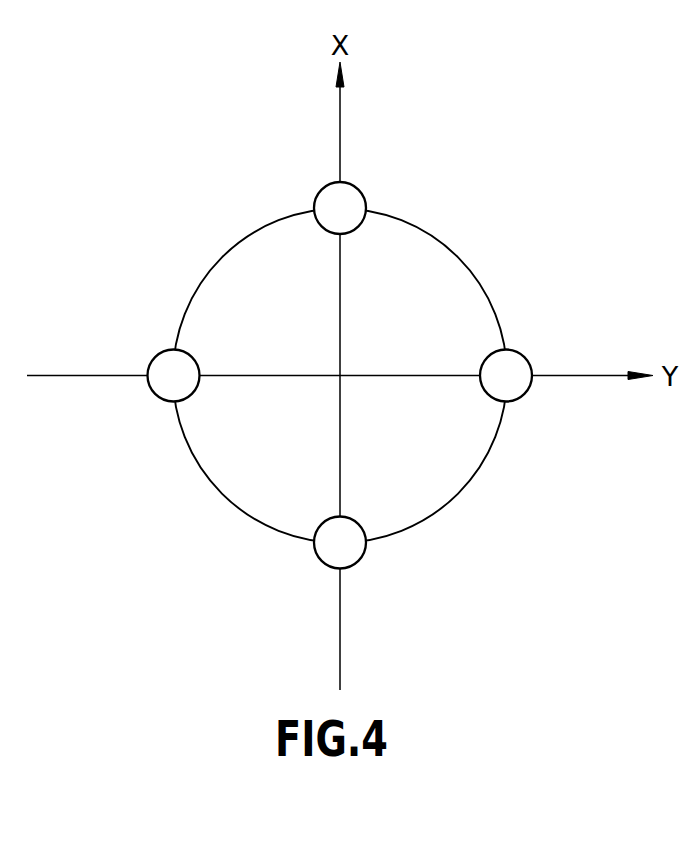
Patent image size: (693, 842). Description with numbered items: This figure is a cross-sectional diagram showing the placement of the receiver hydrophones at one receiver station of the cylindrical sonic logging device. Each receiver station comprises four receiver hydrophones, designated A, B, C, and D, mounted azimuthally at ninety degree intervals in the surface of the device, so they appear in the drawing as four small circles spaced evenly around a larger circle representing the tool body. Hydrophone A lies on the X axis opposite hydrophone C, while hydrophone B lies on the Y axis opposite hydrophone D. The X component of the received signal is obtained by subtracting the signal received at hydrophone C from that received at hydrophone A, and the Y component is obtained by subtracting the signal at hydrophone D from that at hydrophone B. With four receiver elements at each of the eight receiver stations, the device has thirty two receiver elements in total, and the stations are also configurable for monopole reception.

The receiver hydrophone A is at (340, 208).
The receiver hydrophone B is at (506, 376).
The receiver hydrophone C is at (340, 543).
The receiver hydrophone D is at (174, 376).